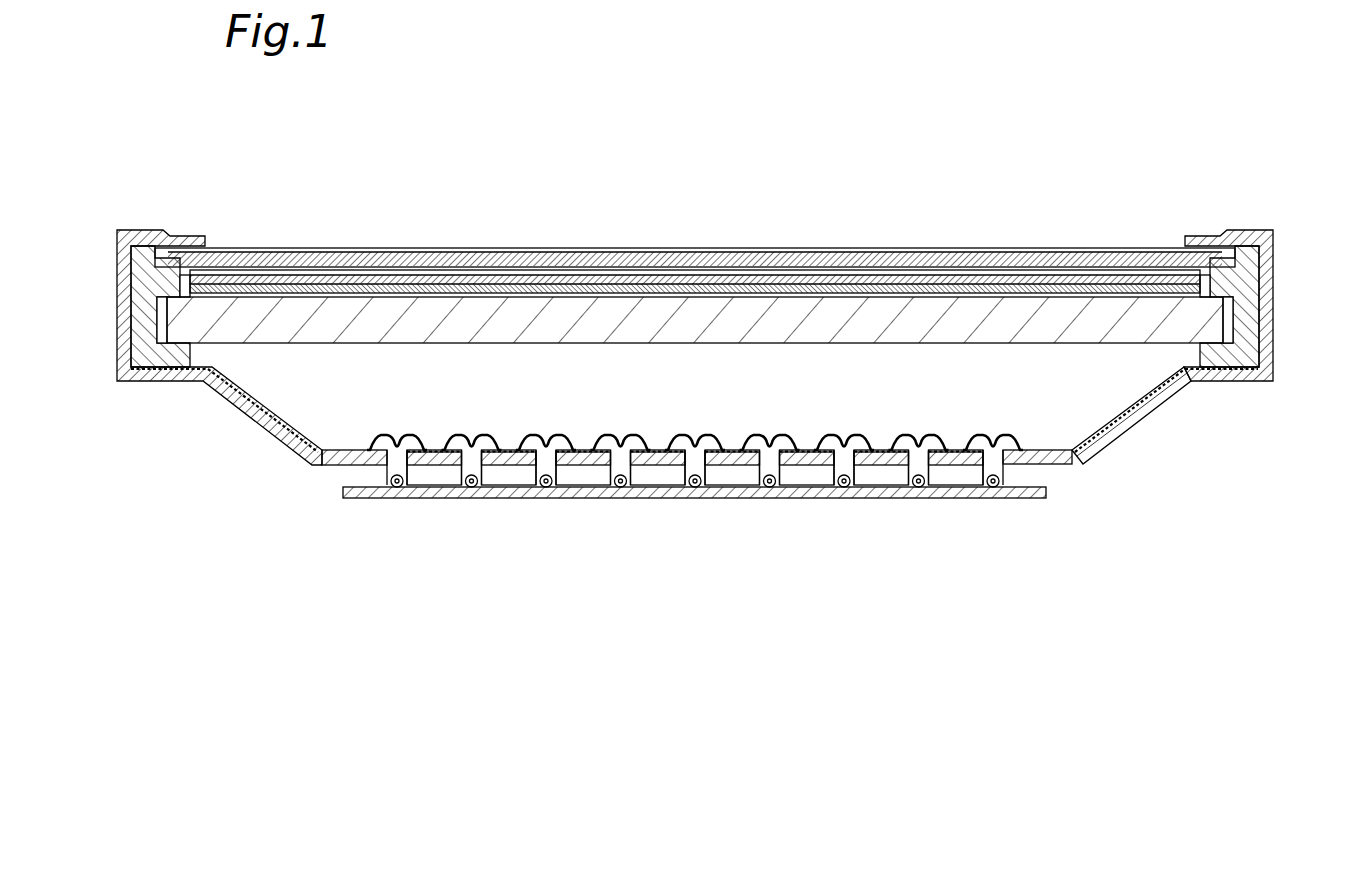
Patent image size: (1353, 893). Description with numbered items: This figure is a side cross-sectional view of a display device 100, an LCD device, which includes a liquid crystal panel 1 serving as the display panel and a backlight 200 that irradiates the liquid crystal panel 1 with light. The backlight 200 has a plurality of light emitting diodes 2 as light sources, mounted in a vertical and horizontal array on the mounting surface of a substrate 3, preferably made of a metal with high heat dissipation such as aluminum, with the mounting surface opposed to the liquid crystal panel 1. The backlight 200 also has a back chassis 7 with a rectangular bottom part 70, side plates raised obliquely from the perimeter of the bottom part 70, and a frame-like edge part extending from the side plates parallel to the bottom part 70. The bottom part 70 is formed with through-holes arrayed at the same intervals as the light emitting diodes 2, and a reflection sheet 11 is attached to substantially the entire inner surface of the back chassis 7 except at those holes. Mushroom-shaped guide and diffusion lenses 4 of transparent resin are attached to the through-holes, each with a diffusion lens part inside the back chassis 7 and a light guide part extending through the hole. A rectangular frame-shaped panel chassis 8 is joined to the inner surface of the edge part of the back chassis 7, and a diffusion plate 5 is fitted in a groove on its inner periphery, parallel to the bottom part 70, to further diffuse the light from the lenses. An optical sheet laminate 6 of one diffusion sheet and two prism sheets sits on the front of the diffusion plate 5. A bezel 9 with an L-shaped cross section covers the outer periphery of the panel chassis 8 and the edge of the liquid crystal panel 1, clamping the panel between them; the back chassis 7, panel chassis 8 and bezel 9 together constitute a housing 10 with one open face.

The display device 100 is at (1137, 130).
The backlight 200 is at (203, 455).
The liquid crystal panel 1 is at (968, 249).
The light emitting diodes 2 is at (398, 499).
The substrate 3 is at (1048, 493).
The guide and diffusion lens 4 is at (417, 444).
The diffusion plate 5 is at (300, 345).
The optical sheet laminate 6 is at (425, 280).
The back chassis 7 is at (1160, 390).
The panel chassis 8 is at (1228, 353).
The bezel 9 is at (1270, 360).
The housing 10 is at (1305, 446).
The reflection sheet 11 is at (1143, 387).
The bottom part 70 is at (336, 467).